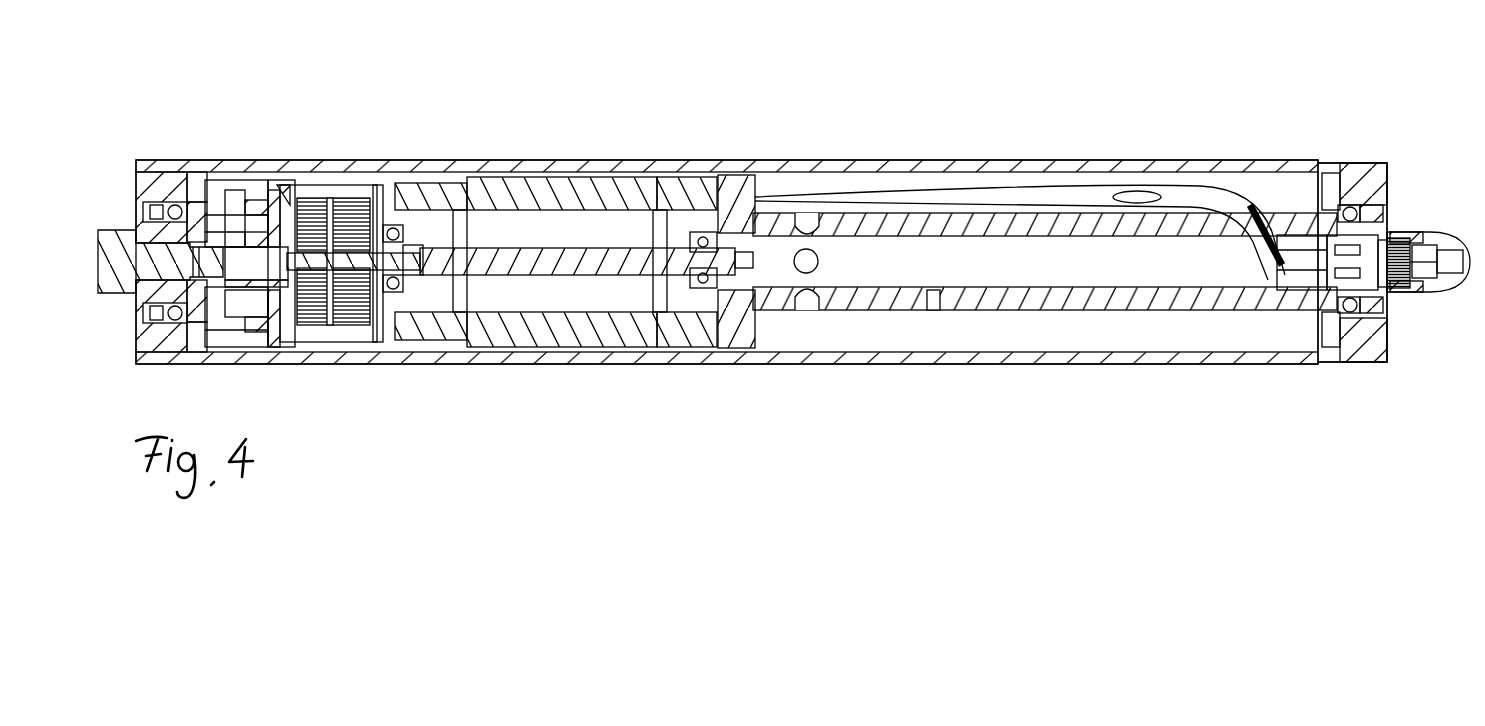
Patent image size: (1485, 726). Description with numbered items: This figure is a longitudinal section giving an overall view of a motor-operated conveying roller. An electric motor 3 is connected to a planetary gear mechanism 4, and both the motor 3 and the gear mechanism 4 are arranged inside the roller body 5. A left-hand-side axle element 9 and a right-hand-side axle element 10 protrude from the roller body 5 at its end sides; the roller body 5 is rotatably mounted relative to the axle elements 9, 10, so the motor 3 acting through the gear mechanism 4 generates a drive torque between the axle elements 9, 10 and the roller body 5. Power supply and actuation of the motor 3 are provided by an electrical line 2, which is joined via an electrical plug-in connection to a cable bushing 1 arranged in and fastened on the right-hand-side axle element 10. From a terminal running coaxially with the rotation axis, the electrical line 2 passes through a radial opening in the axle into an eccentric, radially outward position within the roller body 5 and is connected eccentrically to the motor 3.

The cable bushing 1 is at (1410, 200).
The electrical line 2 is at (1037, 200).
The electric motor 3 is at (567, 200).
The planetary gear mechanism 4 is at (283, 190).
The roller body 5 is at (820, 172).
The left-hand-side axle element 9 is at (120, 268).
The right-hand-side axle element 10 is at (1387, 290).